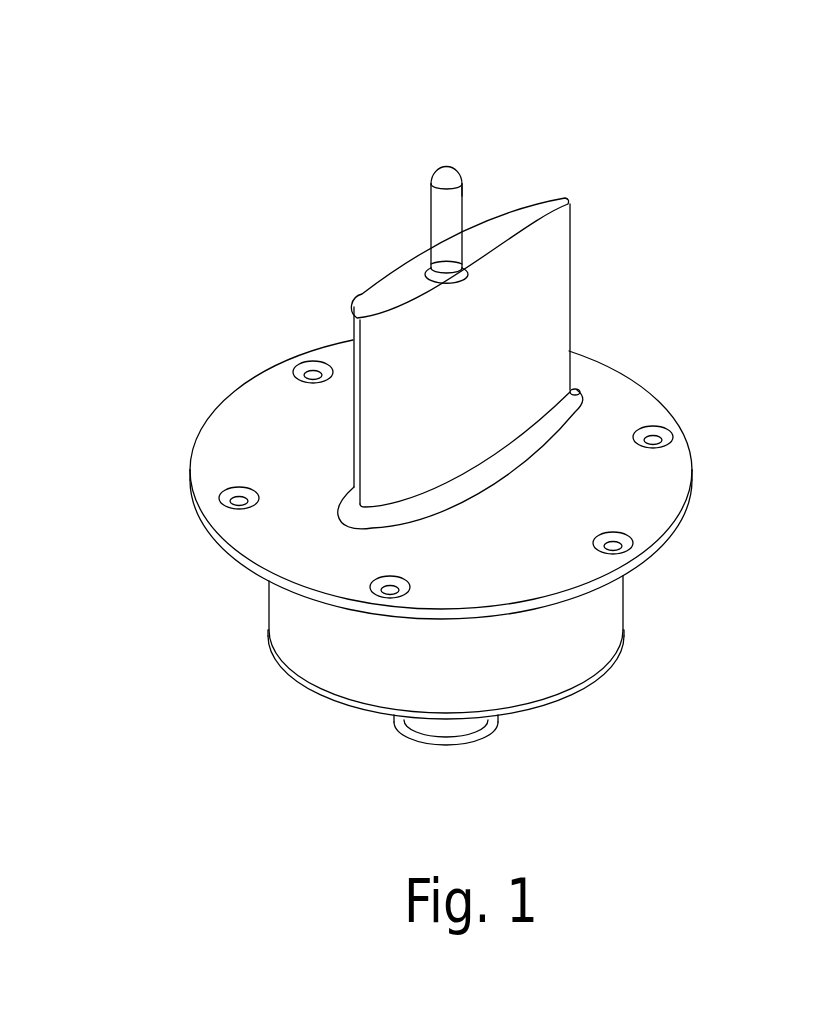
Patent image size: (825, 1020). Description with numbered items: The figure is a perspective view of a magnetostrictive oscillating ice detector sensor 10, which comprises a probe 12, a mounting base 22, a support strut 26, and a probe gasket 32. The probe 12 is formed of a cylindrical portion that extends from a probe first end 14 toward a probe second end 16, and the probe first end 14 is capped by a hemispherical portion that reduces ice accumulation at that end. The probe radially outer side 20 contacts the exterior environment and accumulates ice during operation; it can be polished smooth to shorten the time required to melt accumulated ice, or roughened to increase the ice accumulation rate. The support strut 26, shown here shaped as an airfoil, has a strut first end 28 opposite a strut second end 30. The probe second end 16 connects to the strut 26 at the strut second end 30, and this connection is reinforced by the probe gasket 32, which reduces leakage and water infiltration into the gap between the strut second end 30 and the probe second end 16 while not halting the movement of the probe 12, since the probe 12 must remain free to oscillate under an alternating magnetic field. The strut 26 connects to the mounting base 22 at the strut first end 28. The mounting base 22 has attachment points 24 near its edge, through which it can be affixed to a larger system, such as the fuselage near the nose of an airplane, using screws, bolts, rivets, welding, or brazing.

The magnetostrictive oscillating ice detector sensor 10 is at (697, 108).
The probe 12 is at (431, 206).
The probe first end 14 is at (440, 168).
The probe second end 16 is at (428, 253).
The probe radially outer side 20 is at (467, 190).
The mounting base 22 is at (240, 415).
The attachment points 24 is at (623, 543).
The support strut 26 is at (571, 256).
The strut first end 28 is at (579, 393).
The strut second end 30 is at (569, 199).
The probe gasket 32 is at (424, 268).